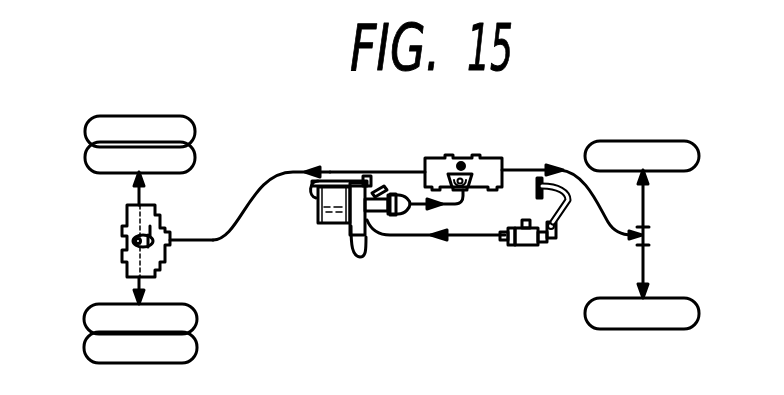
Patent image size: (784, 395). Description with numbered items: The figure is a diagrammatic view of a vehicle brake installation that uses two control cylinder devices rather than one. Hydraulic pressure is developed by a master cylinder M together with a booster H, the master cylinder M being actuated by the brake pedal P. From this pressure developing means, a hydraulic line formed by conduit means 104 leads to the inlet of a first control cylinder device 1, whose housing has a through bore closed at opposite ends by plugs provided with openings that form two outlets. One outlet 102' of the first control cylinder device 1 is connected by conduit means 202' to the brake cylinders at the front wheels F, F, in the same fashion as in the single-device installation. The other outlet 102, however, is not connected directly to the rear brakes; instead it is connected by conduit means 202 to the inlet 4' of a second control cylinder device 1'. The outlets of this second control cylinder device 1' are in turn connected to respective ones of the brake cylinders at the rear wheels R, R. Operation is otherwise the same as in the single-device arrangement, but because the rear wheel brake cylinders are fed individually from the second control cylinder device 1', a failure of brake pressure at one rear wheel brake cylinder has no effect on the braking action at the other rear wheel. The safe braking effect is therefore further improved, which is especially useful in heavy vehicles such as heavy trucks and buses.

The rear wheels R is at (178, 162).
The front wheels F is at (697, 152).
The second control cylinder device 1' is at (110, 241).
The inlet 4' is at (188, 219).
The conduit means 202 is at (307, 178).
The outlet 102 is at (408, 143).
The first control cylinder device 1 is at (477, 152).
The outlet 102' is at (559, 141).
The conduit means 202' is at (644, 204).
The booster H is at (322, 224).
The conduit means 104 is at (418, 205).
The master cylinder M is at (527, 247).
The brake pedal P is at (569, 206).